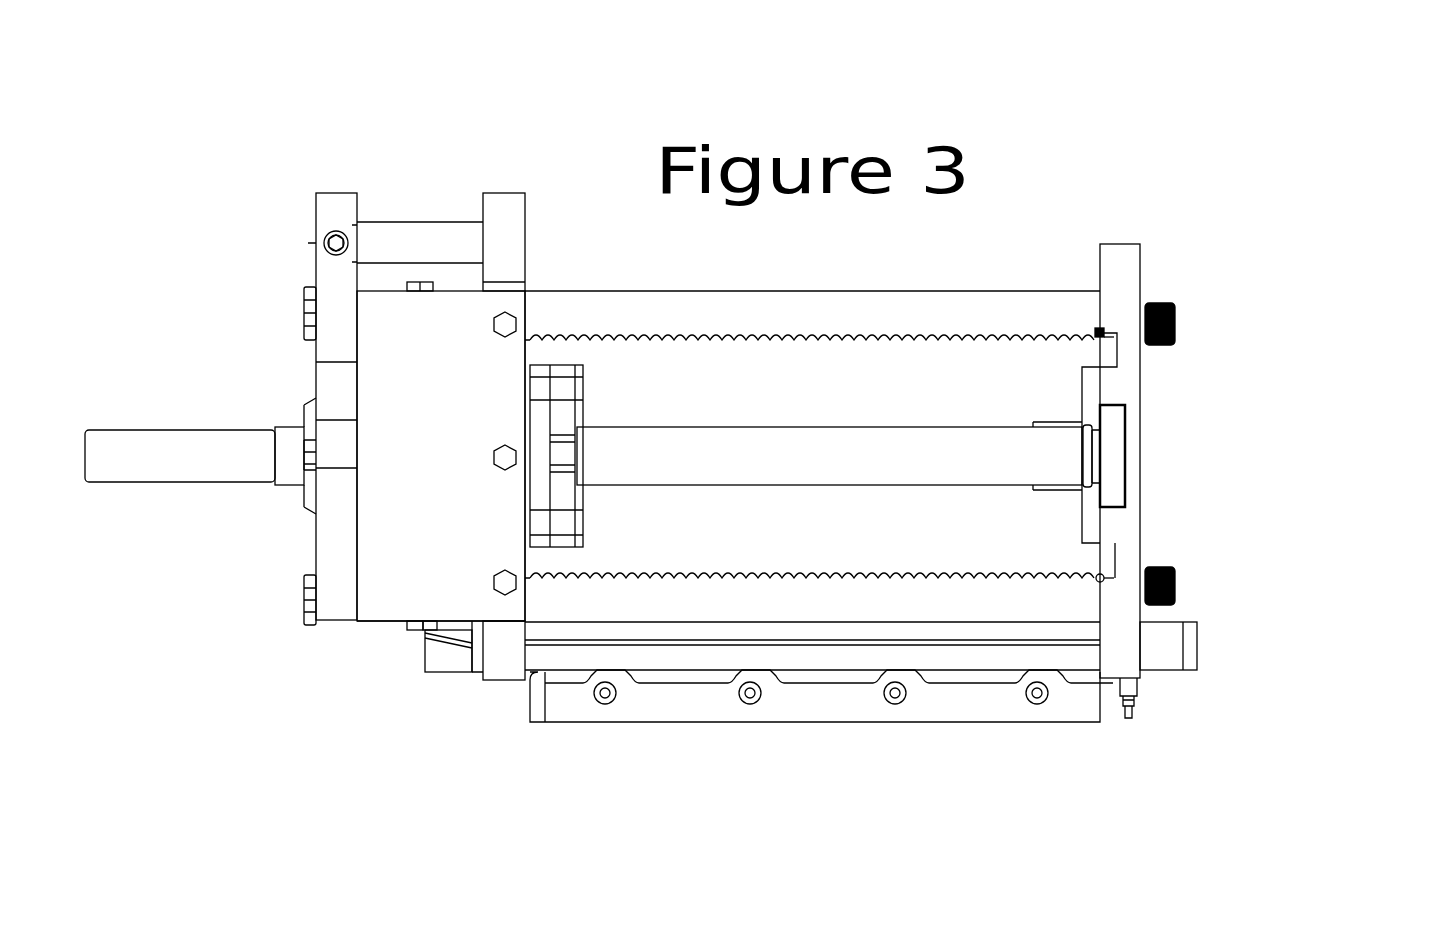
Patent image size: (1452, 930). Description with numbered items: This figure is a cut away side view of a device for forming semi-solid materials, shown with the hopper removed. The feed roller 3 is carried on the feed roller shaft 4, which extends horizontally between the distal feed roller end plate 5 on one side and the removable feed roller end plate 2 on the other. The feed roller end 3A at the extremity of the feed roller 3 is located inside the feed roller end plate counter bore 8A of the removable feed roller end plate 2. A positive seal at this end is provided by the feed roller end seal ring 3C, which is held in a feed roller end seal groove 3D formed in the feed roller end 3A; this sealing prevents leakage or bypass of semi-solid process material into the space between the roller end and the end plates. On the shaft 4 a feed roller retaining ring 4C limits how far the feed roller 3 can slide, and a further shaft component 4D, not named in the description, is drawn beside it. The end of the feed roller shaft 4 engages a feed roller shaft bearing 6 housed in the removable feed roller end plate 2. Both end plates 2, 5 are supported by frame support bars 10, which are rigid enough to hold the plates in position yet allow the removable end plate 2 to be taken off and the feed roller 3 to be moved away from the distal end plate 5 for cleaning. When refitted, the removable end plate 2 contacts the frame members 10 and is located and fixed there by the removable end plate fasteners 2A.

The removable feed roller end plate 2 is at (1145, 407).
The removable end plate fasteners 2A is at (1173, 323).
The feed roller 3 is at (600, 335).
The feed roller end 3A is at (1108, 564).
The feed roller end seal ring 3C is at (1102, 330).
The feed roller end seal groove 3D is at (1113, 343).
The feed roller shaft 4 is at (912, 445).
The feed roller retaining ring 4C is at (1097, 442).
The shaft washer 4D is at (1098, 487).
The distal feed roller end plate 5 is at (505, 240).
The feed roller shaft bearing 6 is at (1110, 415).
The feed roller end plate counter bore 8A is at (1128, 543).
The frame support bars 10 is at (437, 325).